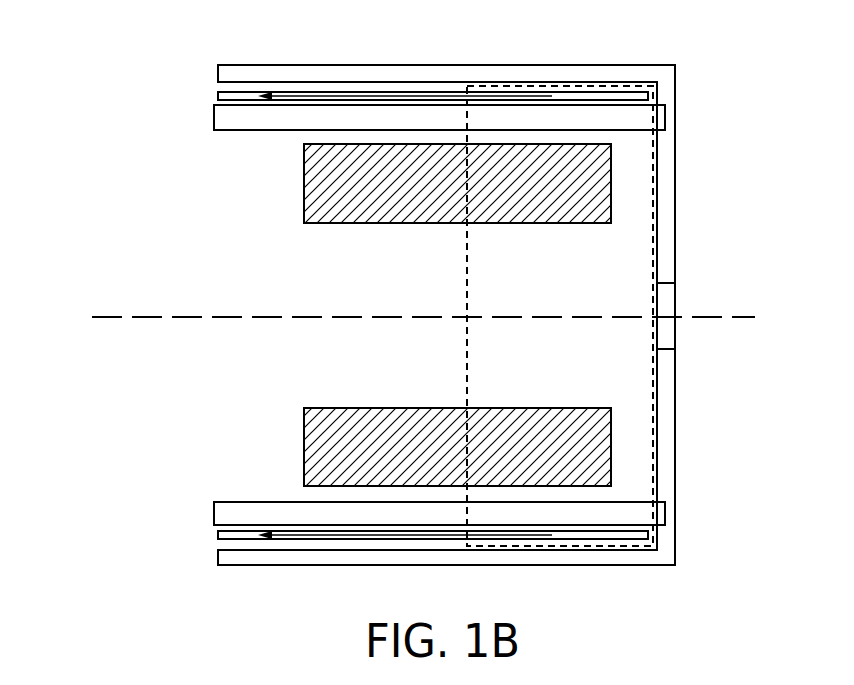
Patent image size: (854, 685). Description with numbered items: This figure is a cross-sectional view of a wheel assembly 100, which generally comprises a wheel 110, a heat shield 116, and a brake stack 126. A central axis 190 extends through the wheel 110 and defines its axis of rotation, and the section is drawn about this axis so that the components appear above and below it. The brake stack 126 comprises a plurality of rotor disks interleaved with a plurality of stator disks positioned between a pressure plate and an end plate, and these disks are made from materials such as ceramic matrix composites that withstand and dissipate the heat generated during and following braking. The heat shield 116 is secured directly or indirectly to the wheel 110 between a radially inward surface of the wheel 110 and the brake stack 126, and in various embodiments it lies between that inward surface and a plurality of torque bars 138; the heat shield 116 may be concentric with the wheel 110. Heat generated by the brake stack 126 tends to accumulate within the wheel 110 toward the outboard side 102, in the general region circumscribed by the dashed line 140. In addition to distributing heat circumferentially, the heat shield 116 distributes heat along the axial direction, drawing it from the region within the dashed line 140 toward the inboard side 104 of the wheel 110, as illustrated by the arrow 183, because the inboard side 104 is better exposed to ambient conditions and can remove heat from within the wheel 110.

The wheel assembly 100 is at (124, 96).
The outboard side 102 is at (703, 214).
The inboard side 104 is at (155, 151).
The wheel 110 is at (669, 171).
The heat shield 116 is at (587, 97).
The brake stack 126 is at (433, 201).
The torque bars 138 is at (254, 123).
The dashed line 140 is at (467, 258).
The arrow 183 is at (357, 97).
The central axis 190 is at (184, 317).